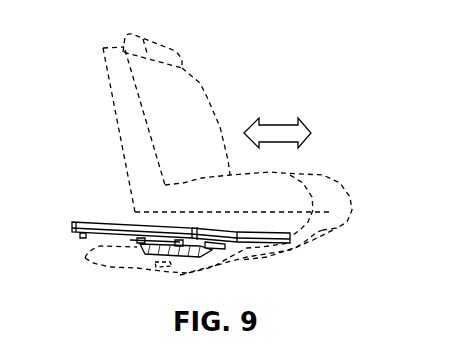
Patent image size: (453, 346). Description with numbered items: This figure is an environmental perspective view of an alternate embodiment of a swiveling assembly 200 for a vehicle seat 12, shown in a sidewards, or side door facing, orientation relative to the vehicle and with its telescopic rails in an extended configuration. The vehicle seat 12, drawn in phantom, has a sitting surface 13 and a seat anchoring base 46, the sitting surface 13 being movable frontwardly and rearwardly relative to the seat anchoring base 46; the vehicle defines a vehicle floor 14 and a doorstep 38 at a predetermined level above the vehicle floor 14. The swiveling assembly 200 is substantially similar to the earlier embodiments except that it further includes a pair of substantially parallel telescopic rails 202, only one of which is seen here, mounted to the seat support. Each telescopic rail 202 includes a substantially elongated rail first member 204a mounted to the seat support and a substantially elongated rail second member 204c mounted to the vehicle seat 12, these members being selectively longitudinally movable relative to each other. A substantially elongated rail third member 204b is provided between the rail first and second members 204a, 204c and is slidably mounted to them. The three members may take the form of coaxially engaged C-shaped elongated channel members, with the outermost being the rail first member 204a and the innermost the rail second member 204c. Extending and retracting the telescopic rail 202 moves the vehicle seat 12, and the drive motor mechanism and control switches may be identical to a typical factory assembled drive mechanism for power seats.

The swiveling assembly 200 is at (220, 135).
The vehicle seat 12 is at (208, 98).
The sitting surface 13 is at (203, 178).
The vehicle floor 14 is at (143, 272).
The doorstep 38 is at (262, 259).
The seat anchoring base 46 is at (330, 212).
The telescopic rail 202 is at (153, 219).
The rail first member 204a is at (79, 228).
The rail third member 204b is at (205, 232).
The rail second member 204c is at (268, 234).